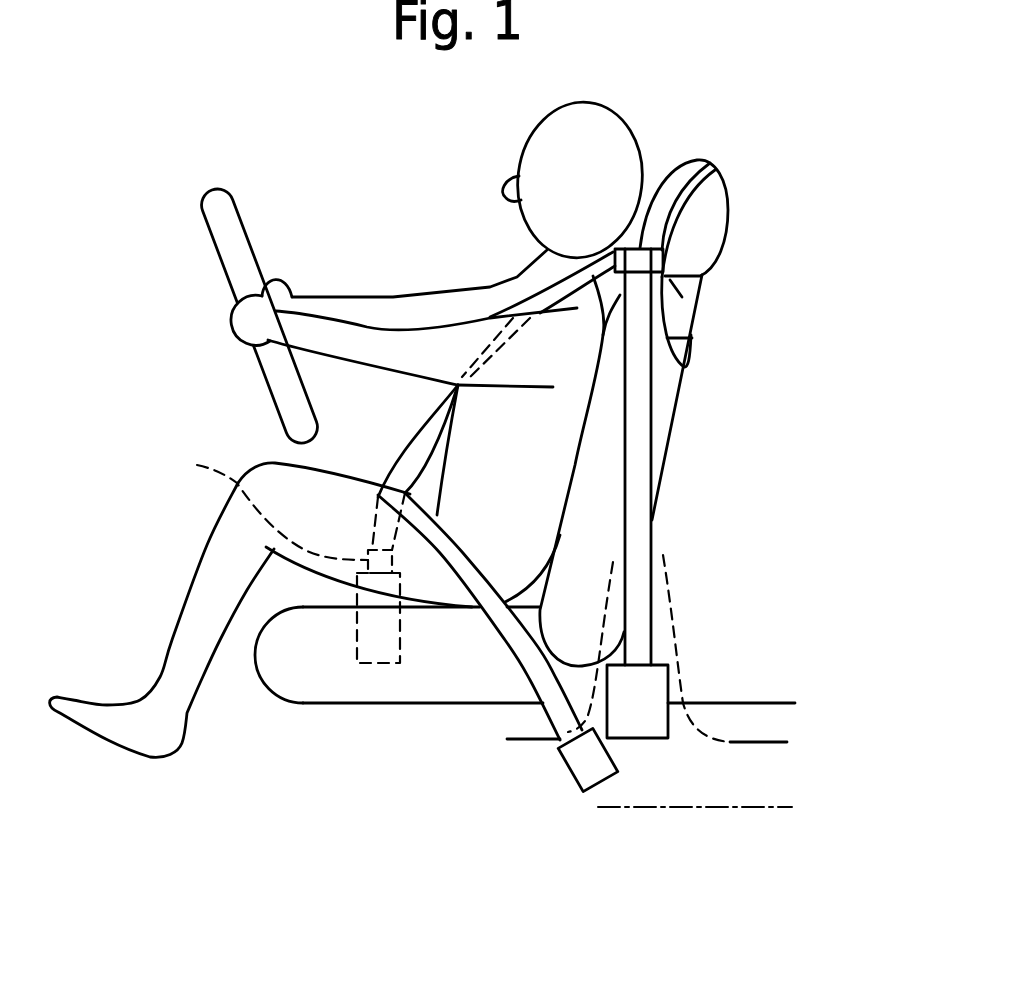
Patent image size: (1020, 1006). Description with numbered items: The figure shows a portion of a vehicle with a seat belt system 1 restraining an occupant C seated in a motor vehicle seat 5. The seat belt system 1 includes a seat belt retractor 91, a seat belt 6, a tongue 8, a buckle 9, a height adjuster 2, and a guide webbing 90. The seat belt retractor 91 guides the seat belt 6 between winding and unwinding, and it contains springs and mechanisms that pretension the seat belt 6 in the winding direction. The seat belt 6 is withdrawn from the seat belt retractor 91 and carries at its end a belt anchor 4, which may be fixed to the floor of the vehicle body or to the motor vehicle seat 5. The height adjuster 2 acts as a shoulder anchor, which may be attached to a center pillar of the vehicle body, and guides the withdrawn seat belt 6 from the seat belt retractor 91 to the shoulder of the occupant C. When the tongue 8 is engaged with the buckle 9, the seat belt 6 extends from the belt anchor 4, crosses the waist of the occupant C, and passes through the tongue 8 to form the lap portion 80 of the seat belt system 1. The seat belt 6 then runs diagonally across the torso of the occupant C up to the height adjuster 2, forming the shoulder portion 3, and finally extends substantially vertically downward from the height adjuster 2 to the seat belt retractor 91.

The seat belt system 1 is at (850, 257).
The height adjuster 2 is at (680, 262).
The shoulder portion 3 is at (528, 282).
The belt anchor 4 is at (582, 768).
The motor vehicle seat 5 is at (678, 412).
The seat belt 6 is at (652, 538).
The tongue 8 is at (197, 465).
The buckle 9 is at (373, 650).
The lap portion 80 is at (404, 493).
The guide webbing 90 is at (698, 335).
The seat belt retractor 91 is at (648, 740).
The occupant C is at (398, 293).